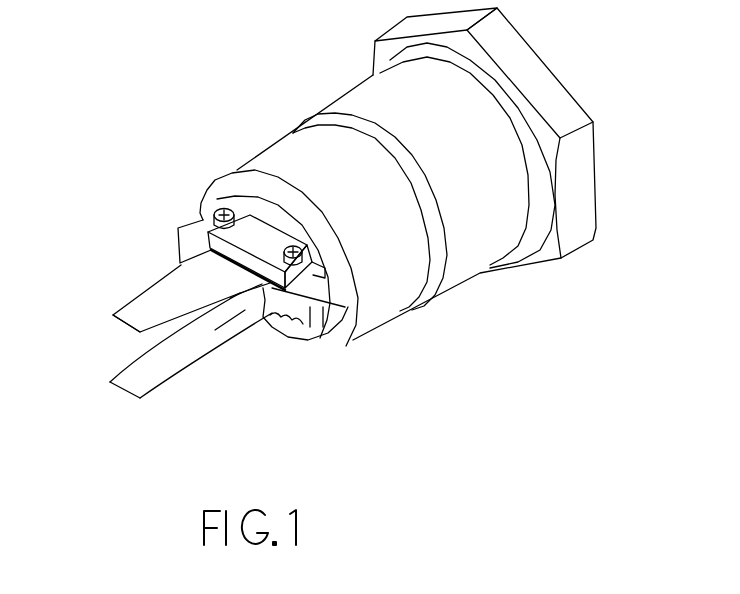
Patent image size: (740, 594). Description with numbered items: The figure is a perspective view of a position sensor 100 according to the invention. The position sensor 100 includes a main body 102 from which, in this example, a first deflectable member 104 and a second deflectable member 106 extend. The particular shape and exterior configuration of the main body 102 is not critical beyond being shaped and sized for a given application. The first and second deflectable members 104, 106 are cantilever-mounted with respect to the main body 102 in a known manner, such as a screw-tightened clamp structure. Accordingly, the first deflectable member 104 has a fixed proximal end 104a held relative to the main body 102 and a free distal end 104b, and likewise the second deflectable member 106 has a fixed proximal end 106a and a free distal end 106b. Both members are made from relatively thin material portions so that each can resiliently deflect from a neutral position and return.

The position sensor 100 is at (186, 163).
The main body 102 is at (472, 258).
The first deflectable member 104 is at (186, 288).
The fixed proximal end 104a is at (238, 282).
The free distal end 104b is at (131, 313).
The second deflectable member 106 is at (161, 376).
The fixed proximal end 106a is at (220, 320).
The free distal end 106b is at (120, 383).